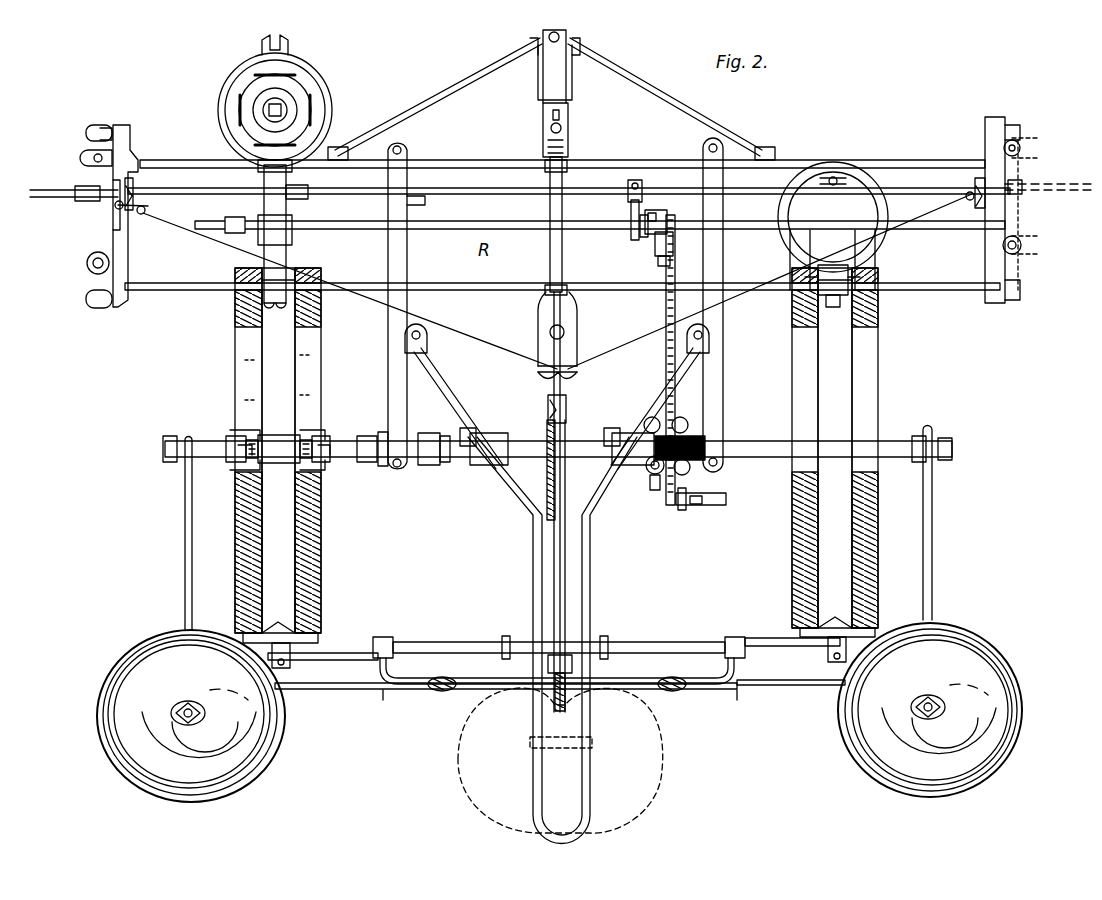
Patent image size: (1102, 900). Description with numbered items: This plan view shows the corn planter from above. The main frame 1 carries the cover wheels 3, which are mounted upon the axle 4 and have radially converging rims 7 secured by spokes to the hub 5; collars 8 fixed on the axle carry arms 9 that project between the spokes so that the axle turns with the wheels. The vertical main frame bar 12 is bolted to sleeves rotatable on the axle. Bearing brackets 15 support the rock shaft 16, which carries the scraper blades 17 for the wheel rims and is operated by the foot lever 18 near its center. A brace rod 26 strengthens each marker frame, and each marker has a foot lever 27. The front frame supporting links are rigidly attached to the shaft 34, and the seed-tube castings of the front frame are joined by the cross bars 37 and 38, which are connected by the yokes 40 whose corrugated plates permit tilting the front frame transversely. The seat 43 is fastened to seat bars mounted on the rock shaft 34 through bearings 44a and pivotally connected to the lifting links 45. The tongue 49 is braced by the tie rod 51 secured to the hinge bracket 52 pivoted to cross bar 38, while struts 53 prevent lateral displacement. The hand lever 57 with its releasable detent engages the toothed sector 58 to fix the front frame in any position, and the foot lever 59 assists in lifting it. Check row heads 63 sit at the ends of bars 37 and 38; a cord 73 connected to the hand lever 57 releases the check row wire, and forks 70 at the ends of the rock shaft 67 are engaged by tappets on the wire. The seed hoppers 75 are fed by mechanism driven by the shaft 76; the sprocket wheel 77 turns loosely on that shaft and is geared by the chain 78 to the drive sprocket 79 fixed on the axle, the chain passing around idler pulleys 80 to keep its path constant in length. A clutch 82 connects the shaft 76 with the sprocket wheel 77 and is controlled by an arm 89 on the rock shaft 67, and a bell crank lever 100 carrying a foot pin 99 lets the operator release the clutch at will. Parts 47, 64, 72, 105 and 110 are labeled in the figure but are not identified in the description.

The main frame 1 is at (253, 543).
The cover wheels 3 is at (557, 414).
The axle 4 is at (362, 457).
The hub 5 is at (253, 452).
The radially converging rims 7 is at (313, 600).
The collars 8 is at (233, 447).
The arms 9 is at (238, 432).
The vertical main frame bar 12 is at (367, 437).
The bearing brackets 15 is at (392, 640).
The rock shaft 16 is at (440, 642).
The scraper blades 17 is at (297, 633).
The foot lever 18 is at (565, 700).
The brace rod 26 is at (185, 533).
The foot lever 27 is at (331, 690).
The rock shaft 34 is at (450, 447).
The cross bar 37 is at (170, 290).
The cross bar 38 is at (158, 157).
The yokes 40 is at (398, 178).
The seat 43 is at (645, 752).
The bearings 44a is at (613, 437).
The lifting links 45 is at (405, 342).
The tongue tube 47 is at (537, 537).
The tongue 49 is at (568, 87).
The tie rod 51 is at (556, 63).
The hinge bracket 52 is at (572, 130).
The struts 53 is at (445, 93).
The hand lever 57 is at (538, 320).
The toothed sector 58 is at (545, 467).
The foot lever 59 is at (603, 633).
The check row heads 63 is at (88, 155).
The bracket cap 64 is at (118, 103).
The rock shaft 67 is at (437, 195).
The fork 70 is at (1032, 178).
The cable lever 72 is at (135, 200).
The cord 73 is at (458, 336).
The seed hoppers 75 is at (833, 226).
The shaft 76 is at (475, 223).
The sprocket wheel 77 is at (740, 250).
The chain 78 is at (665, 300).
The drive sprocket 79 is at (652, 467).
The idler pulleys 80 is at (655, 255).
The clutch 82 is at (640, 238).
The arm 89 is at (630, 203).
The pin 99 is at (688, 506).
The bell crank lever 100 is at (701, 492).
The top frame bar 105 is at (258, 172).
The cable 110 is at (232, 232).